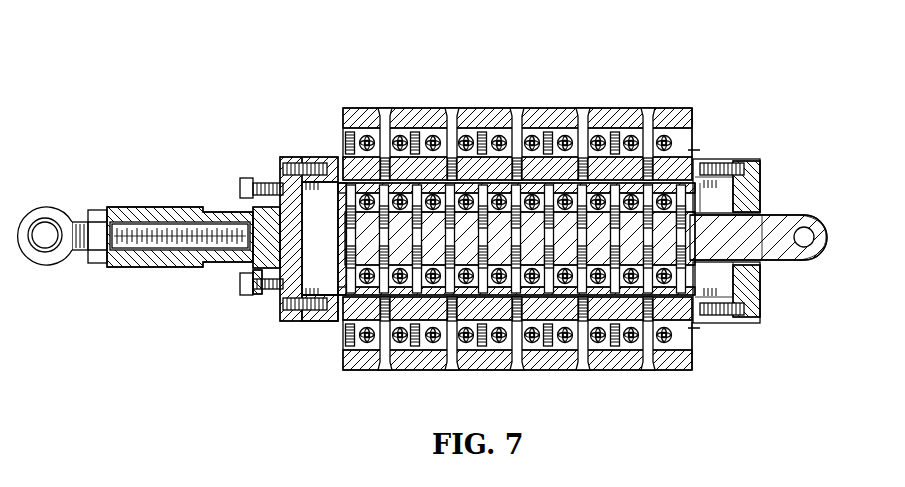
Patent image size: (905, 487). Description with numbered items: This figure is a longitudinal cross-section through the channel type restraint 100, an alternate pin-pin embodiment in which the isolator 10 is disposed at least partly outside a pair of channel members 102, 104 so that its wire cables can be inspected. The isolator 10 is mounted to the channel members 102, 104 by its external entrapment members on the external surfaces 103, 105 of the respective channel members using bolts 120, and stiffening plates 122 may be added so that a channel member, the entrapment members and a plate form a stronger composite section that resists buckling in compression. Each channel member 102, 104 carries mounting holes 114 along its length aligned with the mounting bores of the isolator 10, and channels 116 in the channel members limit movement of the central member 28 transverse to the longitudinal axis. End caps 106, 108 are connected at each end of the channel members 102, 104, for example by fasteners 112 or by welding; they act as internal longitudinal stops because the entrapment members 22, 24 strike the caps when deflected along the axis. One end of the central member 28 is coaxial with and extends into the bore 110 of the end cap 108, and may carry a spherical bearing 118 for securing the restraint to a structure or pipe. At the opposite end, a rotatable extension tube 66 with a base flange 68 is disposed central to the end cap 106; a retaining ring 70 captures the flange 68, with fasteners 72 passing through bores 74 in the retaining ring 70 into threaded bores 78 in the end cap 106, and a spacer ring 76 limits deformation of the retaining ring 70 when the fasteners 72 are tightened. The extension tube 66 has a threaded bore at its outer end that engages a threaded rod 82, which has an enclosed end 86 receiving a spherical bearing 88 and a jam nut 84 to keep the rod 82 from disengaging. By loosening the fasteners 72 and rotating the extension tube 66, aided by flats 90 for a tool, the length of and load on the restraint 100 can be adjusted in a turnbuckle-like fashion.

The channel type restraint 100 is at (378, 65).
The isolator 10 is at (336, 136).
The channels 116 is at (343, 160).
The bolts 120 is at (512, 108).
The stiffening plates 122 is at (625, 108).
The end cap 106 is at (283, 176).
The extension tube 66 is at (134, 206).
The flats 90 is at (182, 208).
The base flange 68 is at (252, 210).
The enclosed end 86 is at (47, 218).
The spherical bearing 88 is at (47, 210).
The threaded rod 82 is at (78, 250).
The jam nut 84 is at (97, 264).
The fasteners 72 is at (238, 285).
The bores 74 is at (251, 295).
The retaining ring 70 is at (260, 298).
The spacer ring 76 is at (278, 302).
The threaded bores 78 is at (292, 302).
The external surface 103 is at (697, 155).
The channel member 102 is at (698, 163).
The fasteners 112 is at (760, 172).
The end cap 108 is at (760, 182).
The bore 110 is at (760, 205).
The entrapment member 22 is at (790, 215).
The spherical bearing 118 is at (818, 250).
The entrapment member 24 is at (767, 261).
The central member 28 is at (792, 261).
The channel member 104 is at (747, 321).
The mounting holes 114 is at (706, 318).
The external surface 105 is at (695, 323).